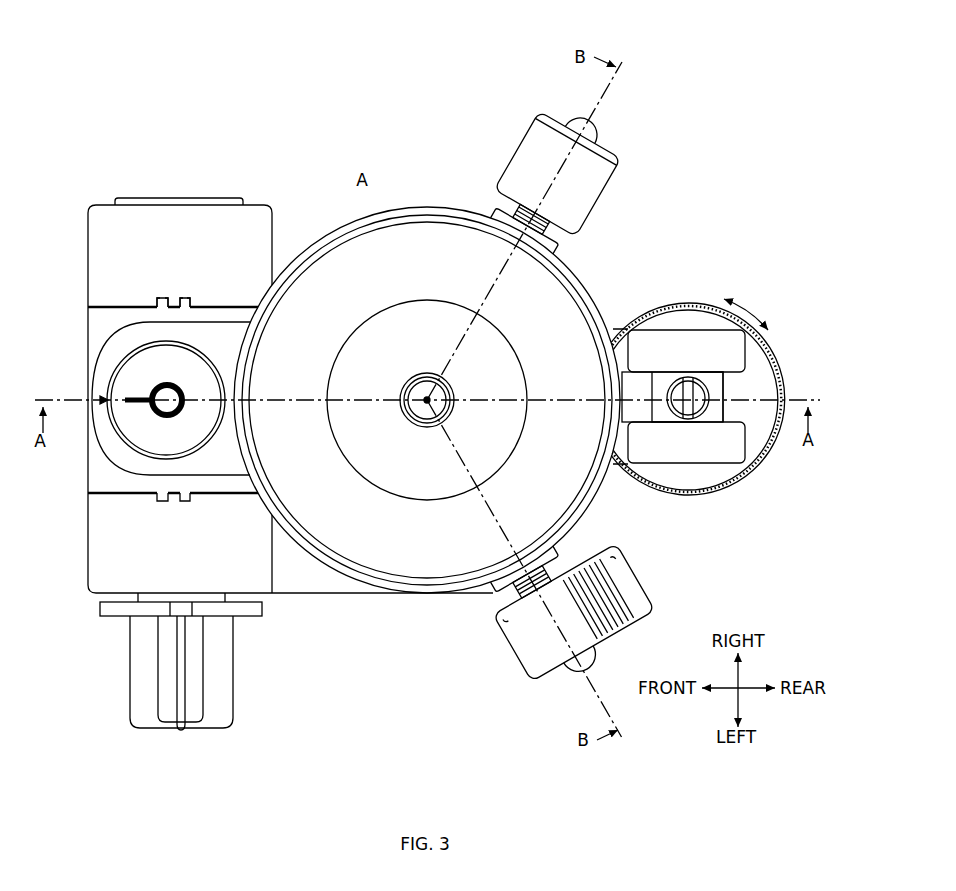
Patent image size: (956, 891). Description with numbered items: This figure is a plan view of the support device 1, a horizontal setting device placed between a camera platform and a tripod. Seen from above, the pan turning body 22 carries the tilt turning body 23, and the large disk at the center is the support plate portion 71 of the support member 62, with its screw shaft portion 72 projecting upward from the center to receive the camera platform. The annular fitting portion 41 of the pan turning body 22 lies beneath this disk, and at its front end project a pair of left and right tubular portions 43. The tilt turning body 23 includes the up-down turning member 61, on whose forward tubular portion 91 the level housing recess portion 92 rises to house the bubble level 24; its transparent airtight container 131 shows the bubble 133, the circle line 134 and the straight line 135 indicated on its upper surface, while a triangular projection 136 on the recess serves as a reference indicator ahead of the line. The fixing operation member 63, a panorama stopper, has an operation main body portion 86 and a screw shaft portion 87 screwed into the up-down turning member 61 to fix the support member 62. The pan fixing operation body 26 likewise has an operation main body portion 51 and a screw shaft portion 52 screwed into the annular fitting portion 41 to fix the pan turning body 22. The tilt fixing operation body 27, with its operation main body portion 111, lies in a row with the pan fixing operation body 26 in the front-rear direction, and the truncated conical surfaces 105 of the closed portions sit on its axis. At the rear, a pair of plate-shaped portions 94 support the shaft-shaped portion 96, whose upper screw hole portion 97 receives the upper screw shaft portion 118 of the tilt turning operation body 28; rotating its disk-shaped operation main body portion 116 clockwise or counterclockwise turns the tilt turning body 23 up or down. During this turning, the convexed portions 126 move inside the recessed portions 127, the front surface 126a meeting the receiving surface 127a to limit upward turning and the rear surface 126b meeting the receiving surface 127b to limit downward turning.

The support device 1 is at (485, 395).
The pan turning body 22 is at (315, 601).
The tilt turning body 23 is at (600, 276).
The bubble level 24 is at (138, 372).
The pan fixing operation body 26 is at (510, 645).
The tilt fixing operation body 27 is at (234, 668).
The tilt turning operation body 28 is at (768, 448).
The annular fitting portion 41 is at (382, 594).
The tubular portion 43 is at (102, 236).
The operation main body portion 51 is at (623, 575).
The screw shaft portion 52 is at (572, 546).
The up-down turning member 61 is at (108, 437).
The support member 62 is at (333, 270).
The fixing operation member 63 is at (600, 172).
The support plate portion 71 is at (433, 235).
The screw shaft portion 72 is at (425, 387).
The operation main body portion 86 is at (588, 155).
The screw shaft portion 87 is at (493, 212).
The tubular portion 91 is at (102, 317).
The level housing recess portion 92 is at (97, 375).
The plate-shaped portion 94 is at (697, 350).
The shaft-shaped portion 96 is at (730, 382).
The upper screw hole portion 97 is at (713, 395).
The truncated conical surface 105 is at (141, 198).
The operation main body portion 111 is at (138, 675).
The operation main body portion 116 is at (663, 472).
The upper screw shaft portion 118 is at (673, 380).
The convexed portion 126 is at (180, 300).
The one side engagement surface 126a is at (167, 302).
The other side engagement surface 126b is at (193, 303).
The recessed portion 127 is at (160, 298).
The one side engagement receiving surface 127a is at (157, 297).
The other side engagement receiving surface 127b is at (187, 297).
The airtight container 131 is at (133, 425).
The bubble 133 is at (162, 420).
The circle line 134 is at (140, 368).
The straight line 135 is at (133, 397).
The projection 136 is at (100, 400).